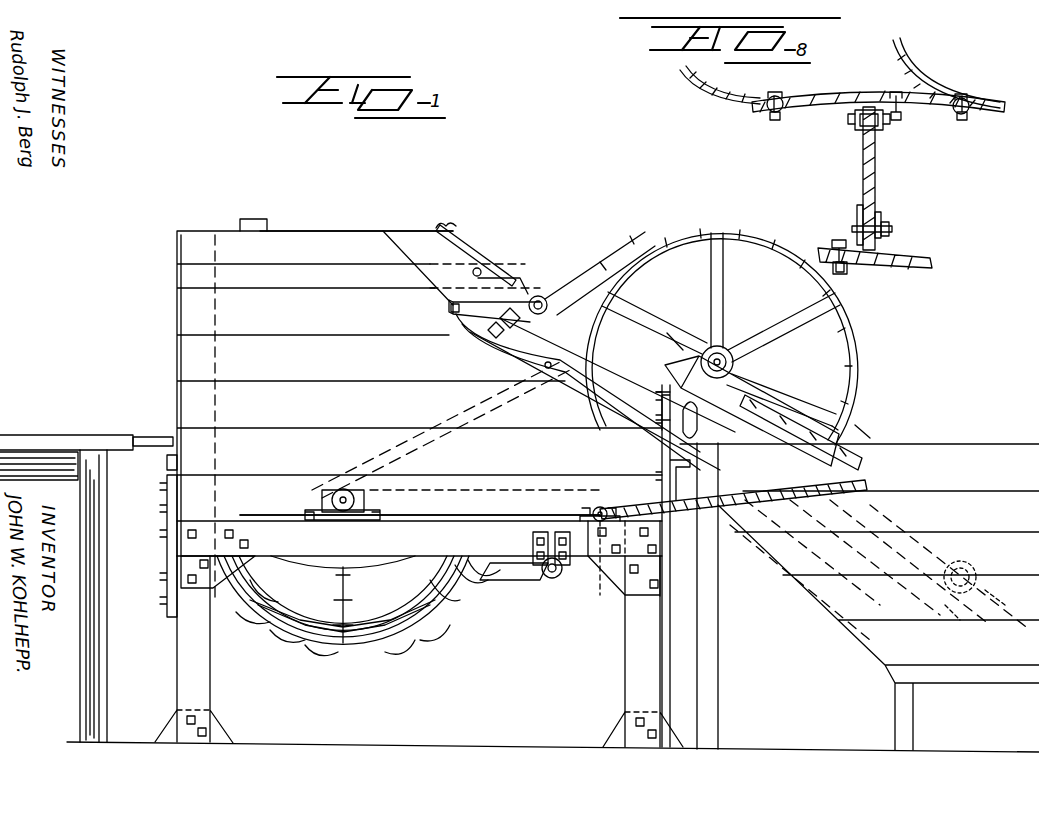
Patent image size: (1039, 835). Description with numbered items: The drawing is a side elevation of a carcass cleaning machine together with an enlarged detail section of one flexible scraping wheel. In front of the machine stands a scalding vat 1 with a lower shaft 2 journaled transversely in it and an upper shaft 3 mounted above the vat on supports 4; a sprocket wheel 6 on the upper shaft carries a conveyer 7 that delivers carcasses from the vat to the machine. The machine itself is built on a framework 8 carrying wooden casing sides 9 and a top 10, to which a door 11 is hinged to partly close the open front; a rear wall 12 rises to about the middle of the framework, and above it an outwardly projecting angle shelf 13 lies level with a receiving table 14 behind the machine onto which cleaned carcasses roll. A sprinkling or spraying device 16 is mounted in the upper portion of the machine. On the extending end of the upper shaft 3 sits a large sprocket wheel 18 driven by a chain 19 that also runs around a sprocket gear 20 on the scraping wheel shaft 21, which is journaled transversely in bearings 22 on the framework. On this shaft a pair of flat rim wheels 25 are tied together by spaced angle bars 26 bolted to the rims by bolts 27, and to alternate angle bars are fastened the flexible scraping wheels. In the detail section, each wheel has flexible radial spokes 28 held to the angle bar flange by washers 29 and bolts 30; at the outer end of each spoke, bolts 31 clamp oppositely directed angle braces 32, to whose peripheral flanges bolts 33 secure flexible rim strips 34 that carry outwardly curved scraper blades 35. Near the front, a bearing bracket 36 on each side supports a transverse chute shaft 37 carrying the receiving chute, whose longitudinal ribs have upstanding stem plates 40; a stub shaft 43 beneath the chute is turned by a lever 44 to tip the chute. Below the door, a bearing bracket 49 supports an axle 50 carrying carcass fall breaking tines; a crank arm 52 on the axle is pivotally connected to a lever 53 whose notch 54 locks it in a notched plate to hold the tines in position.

In FIG. 1, the scalding vat 1 is at (945, 462).
In FIG. 1, the lower shaft 2 is at (975, 568).
In FIG. 1, the upper shaft 3 is at (722, 350).
In FIG. 1, the supports 4 is at (767, 399).
In FIG. 1, the sprocket wheel 6 is at (738, 364).
In FIG. 1, the conveyer 7 is at (850, 424).
In FIG. 1, the framework 8 is at (419, 651).
In FIG. 1, the casing sides 9 is at (419, 409).
In FIG. 1, the top 10 is at (325, 231).
In FIG. 1, the door 11 is at (480, 250).
In FIG. 1, the rear wall 12 is at (172, 543).
In FIG. 1, the angle shelf 13 is at (165, 438).
In FIG. 1, the receiving table 14 is at (45, 440).
In FIG. 1, the sprinkling or spraying device 16 is at (498, 272).
In FIG. 1, the large sprocket wheel 18 is at (718, 280).
In FIG. 1, the driving chain 19 is at (592, 288).
In FIG. 1, the sprocket gear 20 is at (385, 490).
In FIG. 1, the scraping wheel shaft 21 is at (333, 493).
In FIG. 1, the bearings 22 is at (312, 508).
In FIG. 1, the flat rim wheels 25 is at (332, 570).
In FIG. 8, the flat rim wheels 25 is at (928, 268).
In FIG. 8, the angle bars 26 is at (850, 240).
In FIG. 8, the bolts 27 is at (843, 274).
In FIG. 1, the flexible radial arms or spokes 28 is at (400, 568).
In FIG. 8, the flexible radial arms or spokes 28 is at (864, 178).
In FIG. 8, the washers 29 is at (881, 214).
In FIG. 8, the bolts 30 is at (894, 230).
In FIG. 8, the bolts 31 is at (890, 120).
In FIG. 8, the angle braces 32 is at (856, 124).
In FIG. 8, the bolts 33 is at (895, 92).
In FIG. 1, the flexible rim strips 34 is at (385, 600).
In FIG. 8, the flexible rim strips 34 is at (765, 108).
In FIG. 1, the scraper blades 35 is at (428, 612).
In FIG. 8, the scraper blades 35 is at (692, 78).
In FIG. 1, the bearing bracket 36 is at (566, 560).
In FIG. 1, the chute shaft 37 is at (553, 578).
In FIG. 1, the stem plates 40 is at (514, 572).
In FIG. 1, the stub shaft 43 is at (600, 506).
In FIG. 1, the lever 44 is at (672, 520).
In FIG. 1, the bearing bracket 49 is at (450, 326).
In FIG. 1, the axle 50 is at (540, 297).
In FIG. 1, the crank arm 52 is at (477, 292).
In FIG. 1, the lever 53 is at (490, 345).
In FIG. 1, the notch 54 is at (545, 370).